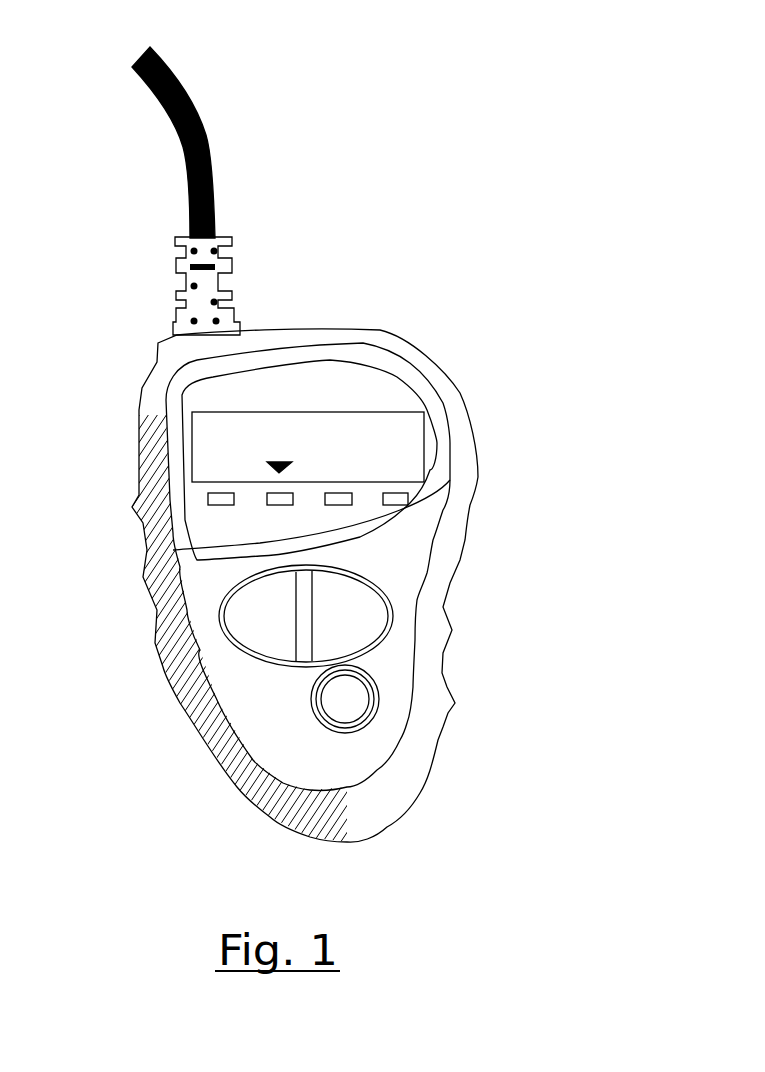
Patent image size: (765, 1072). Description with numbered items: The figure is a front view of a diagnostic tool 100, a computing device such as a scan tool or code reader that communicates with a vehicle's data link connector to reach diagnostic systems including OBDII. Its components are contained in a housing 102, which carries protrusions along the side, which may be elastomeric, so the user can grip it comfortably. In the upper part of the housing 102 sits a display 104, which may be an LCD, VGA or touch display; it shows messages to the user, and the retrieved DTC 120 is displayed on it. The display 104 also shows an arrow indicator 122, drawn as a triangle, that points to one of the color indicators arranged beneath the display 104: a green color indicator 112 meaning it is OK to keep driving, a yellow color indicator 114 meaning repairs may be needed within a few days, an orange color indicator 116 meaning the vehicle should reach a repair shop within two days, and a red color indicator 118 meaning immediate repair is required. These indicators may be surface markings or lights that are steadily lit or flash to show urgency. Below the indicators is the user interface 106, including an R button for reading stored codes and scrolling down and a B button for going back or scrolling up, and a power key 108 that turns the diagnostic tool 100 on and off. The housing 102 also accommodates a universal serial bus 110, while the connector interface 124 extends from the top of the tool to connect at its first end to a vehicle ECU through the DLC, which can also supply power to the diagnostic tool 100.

The diagnostic tool 100 is at (415, 40).
The housing 102 is at (477, 458).
The display 104 is at (413, 427).
The user interface 106 is at (221, 615).
The power key 108 is at (376, 693).
The universal serial bus (USB) 110 is at (140, 413).
The color indicator 112 is at (222, 506).
The color indicator 114 is at (278, 506).
The color indicator 116 is at (337, 506).
The color indicator 118 is at (397, 506).
The DTC 120 is at (360, 437).
The arrow indicator 122 is at (268, 467).
The connector interface 124 is at (203, 130).